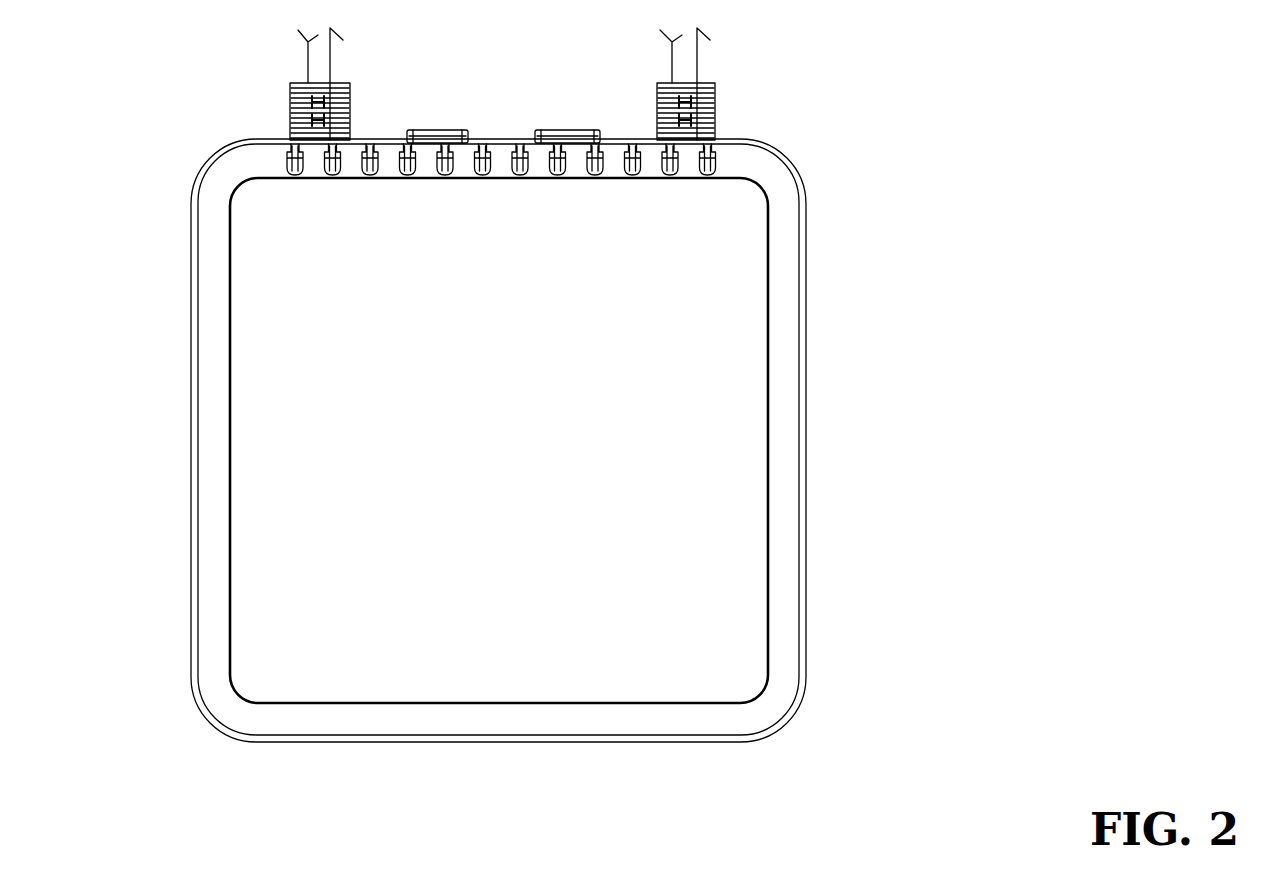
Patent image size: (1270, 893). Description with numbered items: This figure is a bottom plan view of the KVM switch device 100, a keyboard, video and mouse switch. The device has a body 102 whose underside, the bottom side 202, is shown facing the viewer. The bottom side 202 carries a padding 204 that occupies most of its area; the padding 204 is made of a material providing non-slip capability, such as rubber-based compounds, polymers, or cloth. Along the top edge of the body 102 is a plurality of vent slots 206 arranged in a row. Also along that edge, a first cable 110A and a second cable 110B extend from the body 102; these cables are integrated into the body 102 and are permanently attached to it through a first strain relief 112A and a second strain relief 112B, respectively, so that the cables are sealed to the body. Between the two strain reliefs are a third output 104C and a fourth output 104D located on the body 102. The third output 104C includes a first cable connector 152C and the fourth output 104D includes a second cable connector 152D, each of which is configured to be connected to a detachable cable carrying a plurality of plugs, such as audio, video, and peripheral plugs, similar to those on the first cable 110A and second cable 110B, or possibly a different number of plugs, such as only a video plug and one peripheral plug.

The KVM switch device 100 is at (914, 306).
The body 102 is at (191, 418).
The bottom side 202 is at (198, 530).
The padding 204 is at (230, 598).
The vent slots 206 is at (705, 178).
The first cable 110A is at (700, 55).
The second cable 110B is at (332, 52).
The first strain relief 112A is at (713, 97).
The second strain relief 112B is at (348, 84).
The first cable connector 152C is at (560, 130).
The second cable connector 152D is at (443, 130).
The third output 104C is at (584, 103).
The fourth output 104D is at (474, 103).